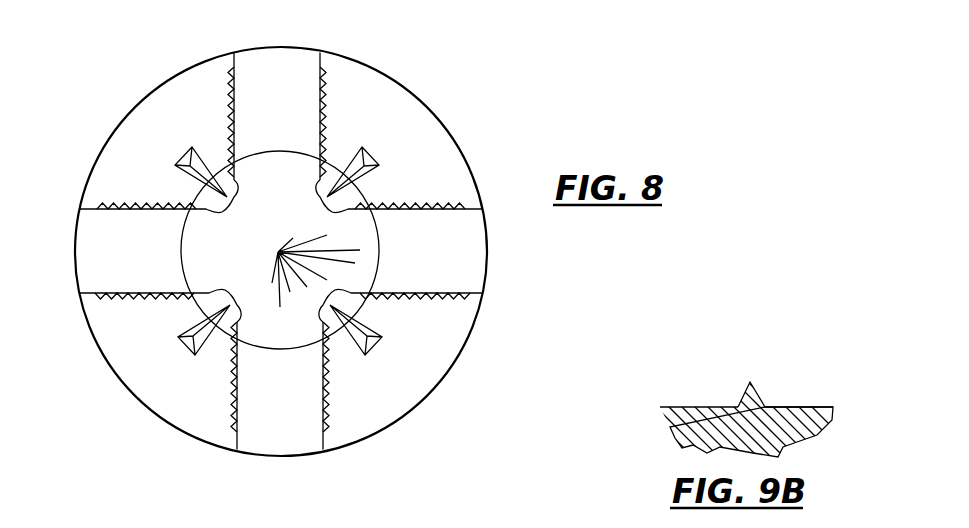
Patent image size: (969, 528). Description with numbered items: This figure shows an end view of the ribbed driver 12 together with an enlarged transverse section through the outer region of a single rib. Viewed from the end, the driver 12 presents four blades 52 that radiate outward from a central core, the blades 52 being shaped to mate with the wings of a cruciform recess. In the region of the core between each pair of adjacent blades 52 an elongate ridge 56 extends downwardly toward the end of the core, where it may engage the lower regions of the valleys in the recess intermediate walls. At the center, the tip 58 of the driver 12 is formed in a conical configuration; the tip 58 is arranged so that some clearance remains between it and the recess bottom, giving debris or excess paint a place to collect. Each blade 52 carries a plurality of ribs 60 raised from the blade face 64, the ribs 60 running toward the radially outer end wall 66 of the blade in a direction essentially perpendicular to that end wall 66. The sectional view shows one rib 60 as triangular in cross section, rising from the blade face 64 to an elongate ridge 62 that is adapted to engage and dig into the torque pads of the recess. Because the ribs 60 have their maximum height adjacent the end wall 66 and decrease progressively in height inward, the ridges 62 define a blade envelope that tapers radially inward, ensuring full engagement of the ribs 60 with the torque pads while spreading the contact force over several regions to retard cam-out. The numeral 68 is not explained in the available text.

In FIG. 8, the driver 12 is at (460, 115).
In FIG. 8, the blades 52 is at (262, 78).
In FIG. 8, the elongate ridge 56 is at (379, 174).
In FIG. 8, the tip 58 is at (333, 270).
In FIG. 8, the ribs 60 is at (282, 209).
In FIG. 9B, the ribs 60 is at (738, 405).
In FIG. 9B, the elongate ridge 62 is at (750, 381).
In FIG. 8, the blade face 64 is at (118, 207).
In FIG. 9B, the blade face 64 is at (793, 405).
In FIG. 8, the end wall 66 is at (296, 68).
In FIG. 8, the serrations 68 is at (120, 300).